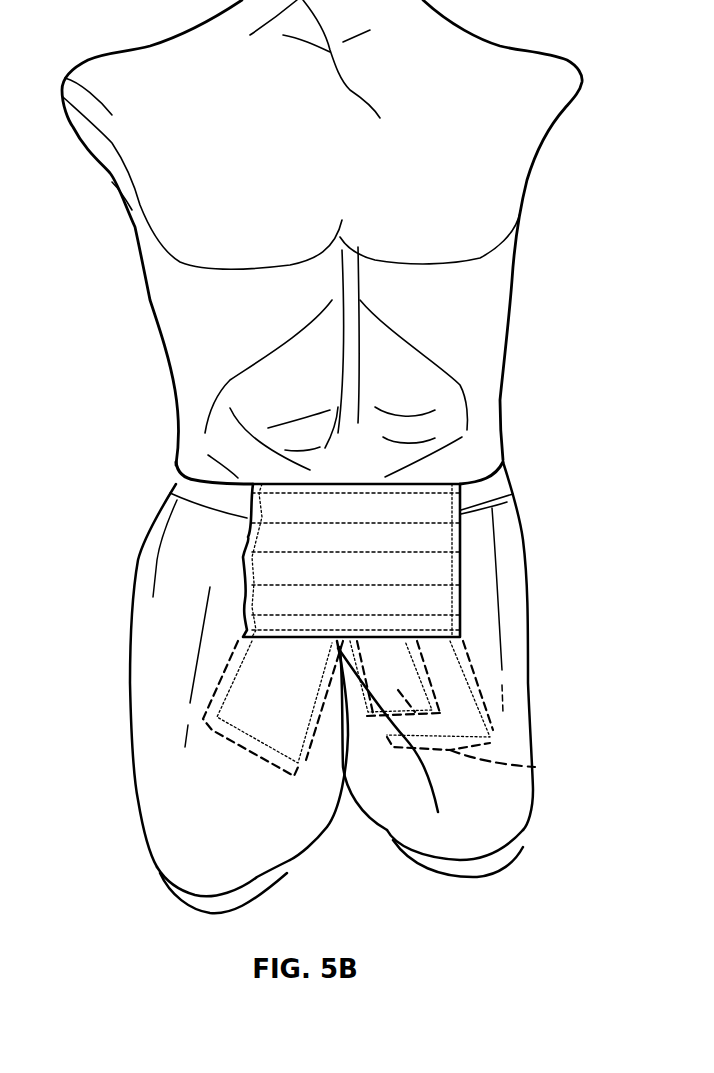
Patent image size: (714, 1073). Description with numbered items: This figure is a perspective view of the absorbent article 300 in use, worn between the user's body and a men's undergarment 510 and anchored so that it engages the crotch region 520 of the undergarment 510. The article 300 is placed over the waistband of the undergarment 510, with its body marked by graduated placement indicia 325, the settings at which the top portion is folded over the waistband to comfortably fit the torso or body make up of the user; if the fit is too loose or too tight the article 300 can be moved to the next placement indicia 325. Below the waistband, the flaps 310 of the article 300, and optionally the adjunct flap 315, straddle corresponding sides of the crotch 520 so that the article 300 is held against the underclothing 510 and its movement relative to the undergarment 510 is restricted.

The absorbent article 300 is at (218, 637).
The flaps 310 is at (263, 758).
The adjunct flap 315 is at (530, 767).
The placement indicia 325 is at (440, 550).
The undergarment 510 is at (137, 597).
The crotch region 520 is at (421, 733).